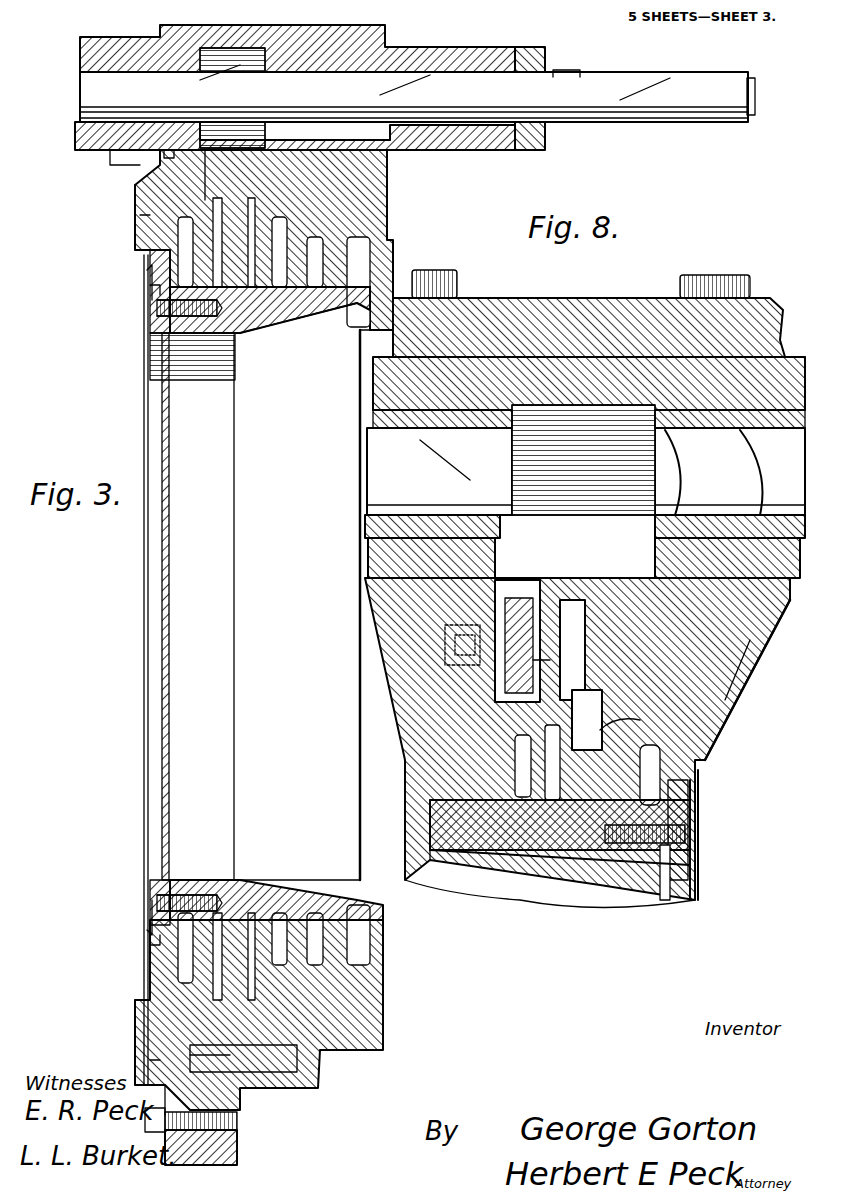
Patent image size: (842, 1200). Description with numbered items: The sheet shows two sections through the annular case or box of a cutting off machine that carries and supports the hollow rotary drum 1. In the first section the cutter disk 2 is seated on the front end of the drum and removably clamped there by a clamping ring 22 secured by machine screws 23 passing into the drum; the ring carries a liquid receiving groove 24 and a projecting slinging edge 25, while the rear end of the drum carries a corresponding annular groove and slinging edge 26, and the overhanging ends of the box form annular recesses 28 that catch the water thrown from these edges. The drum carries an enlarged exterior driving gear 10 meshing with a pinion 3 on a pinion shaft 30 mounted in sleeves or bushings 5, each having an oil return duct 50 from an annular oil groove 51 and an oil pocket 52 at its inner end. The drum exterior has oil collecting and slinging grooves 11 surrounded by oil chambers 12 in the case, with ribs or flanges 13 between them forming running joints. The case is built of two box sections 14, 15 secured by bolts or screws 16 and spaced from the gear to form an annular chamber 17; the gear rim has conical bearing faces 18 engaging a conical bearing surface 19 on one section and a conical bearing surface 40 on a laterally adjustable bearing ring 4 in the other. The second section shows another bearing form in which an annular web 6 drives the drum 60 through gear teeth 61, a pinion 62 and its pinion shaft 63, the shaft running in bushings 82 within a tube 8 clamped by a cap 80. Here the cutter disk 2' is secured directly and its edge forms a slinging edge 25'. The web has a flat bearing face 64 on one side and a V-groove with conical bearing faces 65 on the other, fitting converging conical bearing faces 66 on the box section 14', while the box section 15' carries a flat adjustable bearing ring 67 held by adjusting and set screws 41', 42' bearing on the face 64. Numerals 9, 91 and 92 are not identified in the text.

In FIG. 3, the hollow rotary drum 1 is at (258, 888).
In FIG. 3, the cutter disk 2 is at (192, 357).
In FIG. 3, the pinion 3 is at (245, 58).
In FIG. 3, the laterally adjustable bearing ring 4 is at (170, 155).
In FIG. 3, the sleeves or bushings 5 is at (80, 58).
In FIG. 8, the annular web 6 is at (590, 738).
In FIG. 8, the tube 8 is at (375, 555).
In FIG. 8, the housing wall 9 is at (790, 594).
In FIG. 3, the exterior driving gear 10 is at (290, 1100).
In FIG. 3, the oil collecting and slinging grooves 11 is at (270, 315).
In FIG. 8, the oil collecting and slinging grooves 11 is at (532, 845).
In FIG. 3, the oil chambers 12 is at (185, 240).
In FIG. 8, the oil chambers 12 is at (648, 785).
In FIG. 3, the ribs or flanges 13 is at (320, 305).
In FIG. 8, the ribs or flanges 13 is at (500, 788).
In FIG. 3, the box section 14 is at (111, 635).
In FIG. 3, the box section 15 is at (277, 630).
In FIG. 3, the bolts or screws 16 is at (237, 1124).
In FIG. 3, the annular chamber 17 is at (150, 1095).
In FIG. 3, the conical bearing faces 18 is at (125, 1005).
In FIG. 3, the conical bearing surface 19 is at (245, 200).
In FIG. 3, the clamping ring 22 is at (150, 328).
In FIG. 3, the machine screws 23 is at (150, 306).
In FIG. 3, the liquid receiving groove 24 is at (160, 290).
In FIG. 3, the liquid slinging edge 25 is at (115, 600).
In FIG. 3, the annular groove and slinging edge 26 is at (385, 930).
In FIG. 8, the annular groove and slinging edge 26 is at (455, 860).
In FIG. 3, the annular recesses 28 is at (155, 255).
In FIG. 3, the pinion shaft 30 is at (90, 97).
In FIG. 3, the conical bearing surface 40 is at (140, 218).
In FIG. 3, the oil return duct 50 is at (95, 140).
In FIG. 3, the annular oil groove 51 is at (555, 68).
In FIG. 3, the oil pockets 52 is at (222, 47).
In FIG. 8, the drum 60 is at (590, 862).
In FIG. 8, the gear teeth 61 is at (517, 629).
In FIG. 8, the pinion 62 is at (568, 420).
In FIG. 8, the pinion shaft 63 is at (382, 462).
In FIG. 8, the flat bearing face 64 is at (531, 663).
In FIG. 8, the conical bearing faces 65 is at (640, 600).
In FIG. 8, the converging conical bearing faces 66 is at (710, 645).
In FIG. 8, the flat adjustable bearing ring 67 is at (478, 760).
In FIG. 8, the cap 80 is at (540, 300).
In FIG. 8, the bushings 82 is at (370, 535).
In FIG. 8, the bolt 91 is at (462, 270).
In FIG. 8, the plate 92 is at (792, 365).
In FIG. 8, the box section 14' is at (755, 670).
In FIG. 8, the box section 15' is at (547, 739).
In FIG. 8, the liquid slinging edge 25' is at (722, 835).
In FIG. 8, the cutter disk 2' is at (710, 872).
In FIG. 8, the adjusting screws 41' is at (401, 630).
In FIG. 8, the set screws 42' is at (390, 649).